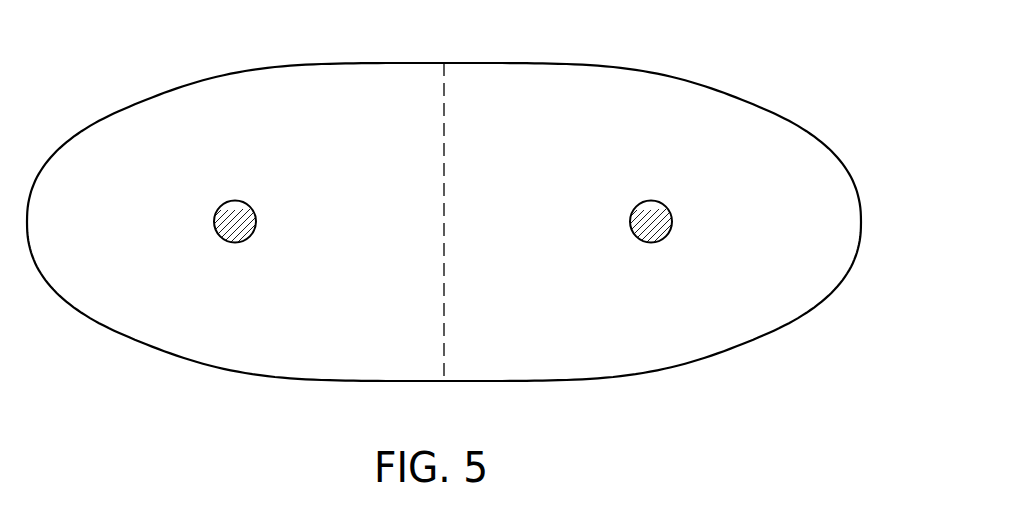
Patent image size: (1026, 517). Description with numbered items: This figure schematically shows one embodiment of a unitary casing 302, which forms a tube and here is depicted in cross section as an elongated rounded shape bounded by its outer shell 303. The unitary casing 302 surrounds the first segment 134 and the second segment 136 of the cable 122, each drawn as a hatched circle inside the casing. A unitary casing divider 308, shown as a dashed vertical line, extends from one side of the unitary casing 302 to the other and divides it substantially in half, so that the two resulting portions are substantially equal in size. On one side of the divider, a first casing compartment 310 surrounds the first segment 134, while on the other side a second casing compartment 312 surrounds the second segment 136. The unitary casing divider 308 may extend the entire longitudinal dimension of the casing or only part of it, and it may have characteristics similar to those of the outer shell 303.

The unitary casing 302 is at (467, 200).
The outer shell 303 is at (700, 359).
The unitary casing divider 308 is at (444, 137).
The first segment 134 is at (257, 222).
The second segment 136 is at (673, 222).
The first casing compartment 310 is at (155, 107).
The cable 122 is at (264, 79).
The second casing compartment 312 is at (732, 106).